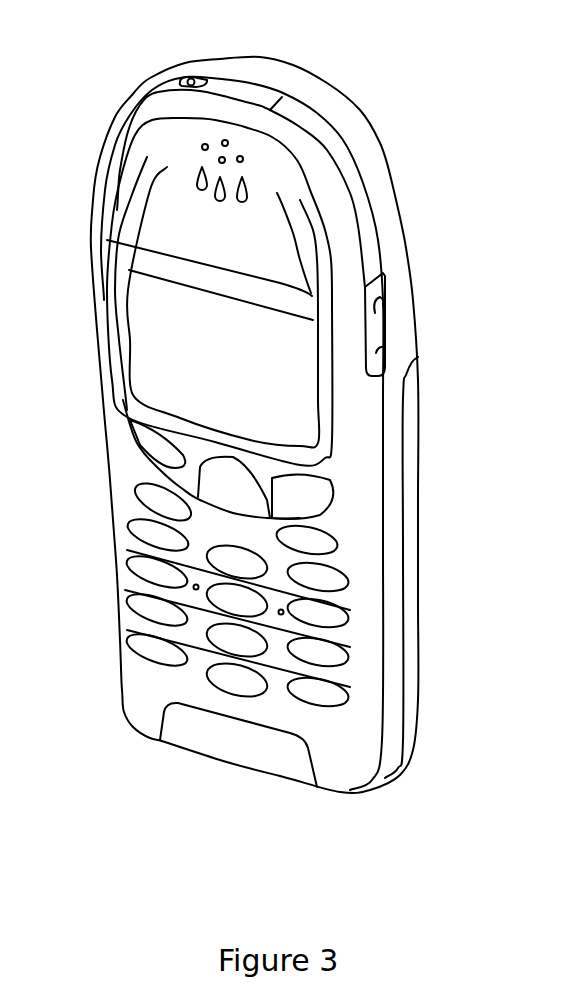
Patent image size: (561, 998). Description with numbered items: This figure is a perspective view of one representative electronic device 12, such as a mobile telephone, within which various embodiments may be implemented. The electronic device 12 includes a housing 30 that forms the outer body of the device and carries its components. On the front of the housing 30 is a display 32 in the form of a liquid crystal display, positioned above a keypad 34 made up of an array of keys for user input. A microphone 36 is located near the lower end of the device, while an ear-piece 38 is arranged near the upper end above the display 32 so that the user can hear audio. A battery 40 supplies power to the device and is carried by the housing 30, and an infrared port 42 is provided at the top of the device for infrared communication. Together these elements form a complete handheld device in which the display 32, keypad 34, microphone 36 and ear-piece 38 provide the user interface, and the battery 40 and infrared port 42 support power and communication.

The electronic device 12 is at (364, 64).
The housing 30 is at (390, 205).
The display 32 is at (297, 397).
The keypad 34 is at (317, 700).
The microphone 36 is at (183, 735).
The ear-piece 38 is at (197, 165).
The battery 40 is at (412, 682).
The infrared port 42 is at (243, 90).